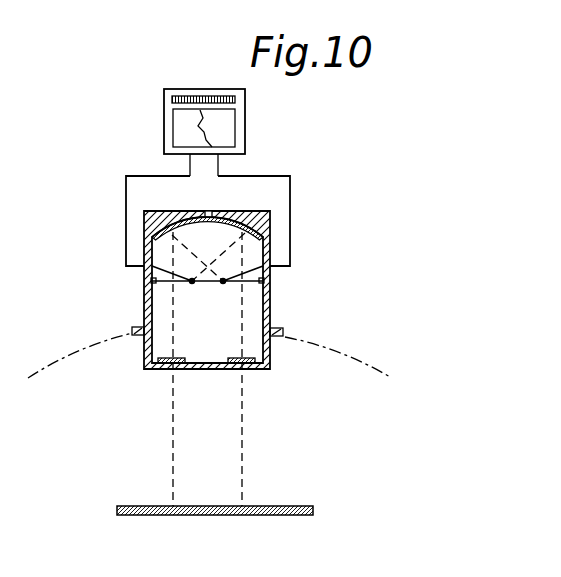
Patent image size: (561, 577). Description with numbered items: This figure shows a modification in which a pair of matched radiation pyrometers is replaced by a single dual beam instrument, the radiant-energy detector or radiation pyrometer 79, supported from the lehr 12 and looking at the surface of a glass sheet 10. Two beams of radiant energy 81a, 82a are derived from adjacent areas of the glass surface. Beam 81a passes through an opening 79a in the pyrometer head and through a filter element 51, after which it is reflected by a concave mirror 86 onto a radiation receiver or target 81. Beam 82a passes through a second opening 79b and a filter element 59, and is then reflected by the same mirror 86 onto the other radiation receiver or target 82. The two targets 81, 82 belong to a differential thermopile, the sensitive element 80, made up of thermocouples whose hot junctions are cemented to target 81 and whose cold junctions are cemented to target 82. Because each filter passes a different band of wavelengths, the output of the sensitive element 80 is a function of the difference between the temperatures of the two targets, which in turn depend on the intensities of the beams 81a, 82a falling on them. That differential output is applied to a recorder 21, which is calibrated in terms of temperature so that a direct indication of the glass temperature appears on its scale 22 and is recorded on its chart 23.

The glass sheet 10 is at (210, 515).
The lehr 12 is at (78, 353).
The recorder 21 is at (245, 118).
The scale 22 is at (190, 95).
The chart 23 is at (230, 138).
The filter element 51 is at (253, 370).
The filter element 59 is at (160, 370).
The radiant-energy detector or radiation pyrometer 79 is at (270, 223).
The opening in pyrometer head 79a is at (240, 370).
The opening in pyrometer head 79b is at (178, 370).
The sensitive element or thermopile 80 is at (265, 290).
The radiation receiver or target 81 is at (192, 284).
The radiation receiver or target 82 is at (223, 283).
The radiant energy beam 81a is at (242, 462).
The radiant energy beam 82a is at (172, 470).
The concave mirror 86 is at (208, 221).